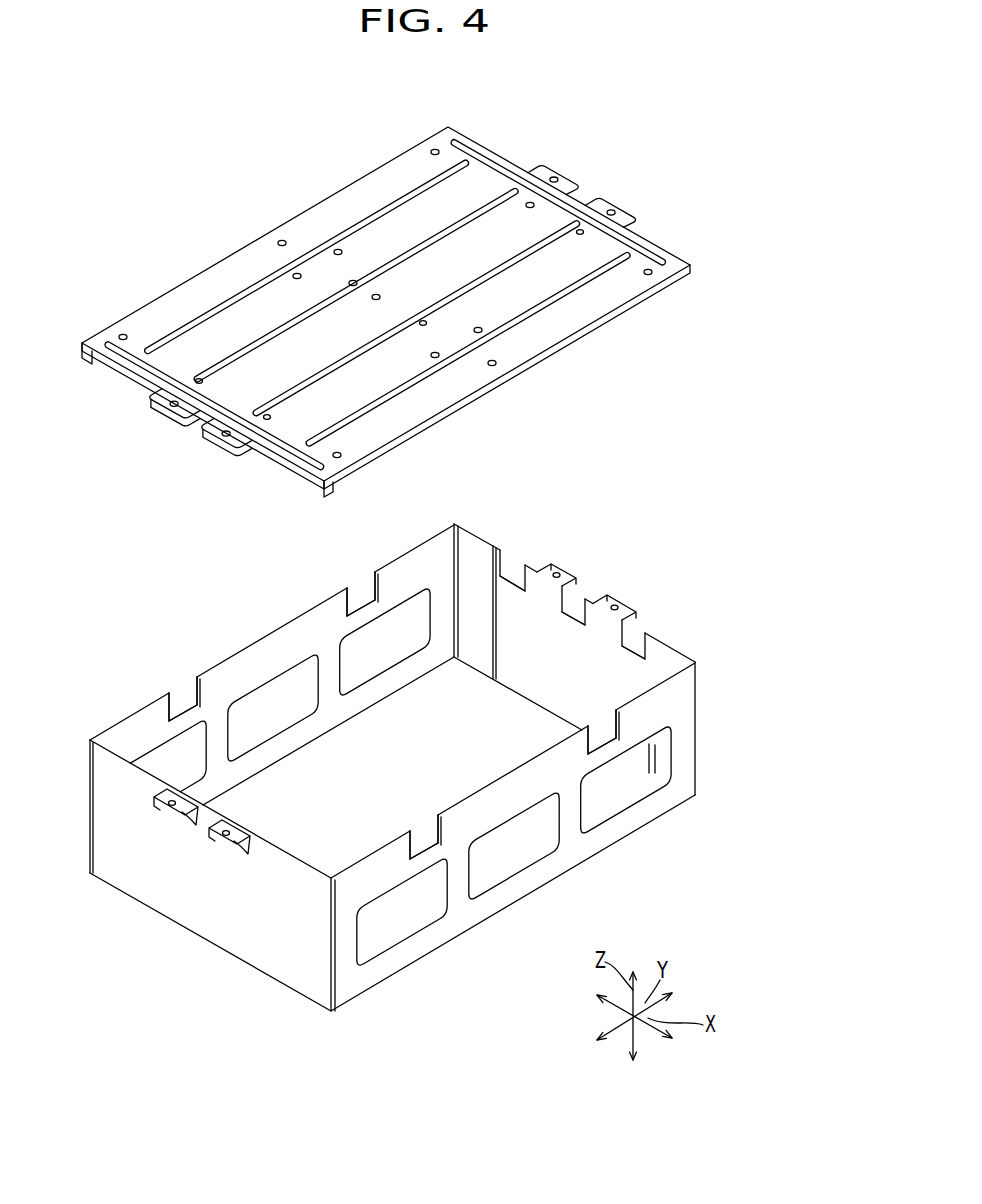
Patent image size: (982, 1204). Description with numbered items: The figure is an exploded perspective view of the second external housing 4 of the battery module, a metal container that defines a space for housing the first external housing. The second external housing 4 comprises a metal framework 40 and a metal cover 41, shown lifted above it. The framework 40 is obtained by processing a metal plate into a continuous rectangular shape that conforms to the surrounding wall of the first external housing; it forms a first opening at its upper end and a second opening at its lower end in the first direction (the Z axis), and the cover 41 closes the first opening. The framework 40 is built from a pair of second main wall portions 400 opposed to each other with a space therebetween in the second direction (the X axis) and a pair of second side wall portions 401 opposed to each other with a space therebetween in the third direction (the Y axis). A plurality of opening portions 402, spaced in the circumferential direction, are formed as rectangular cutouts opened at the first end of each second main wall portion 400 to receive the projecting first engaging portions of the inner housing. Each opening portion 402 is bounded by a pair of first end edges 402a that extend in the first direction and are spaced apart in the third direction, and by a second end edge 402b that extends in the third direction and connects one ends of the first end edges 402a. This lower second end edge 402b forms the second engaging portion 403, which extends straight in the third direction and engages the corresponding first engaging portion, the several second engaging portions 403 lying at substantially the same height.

The second external housing 4 is at (802, 385).
The framework 40 is at (437, 748).
The cover 41 is at (653, 327).
The second main wall portion 400 is at (298, 618).
The second side wall portion 401 is at (492, 546).
The opening portion 402 is at (363, 585).
The first end edge 402a is at (375, 577).
The second end edge 402b is at (352, 600).
The second engaging portion 403 is at (356, 704).